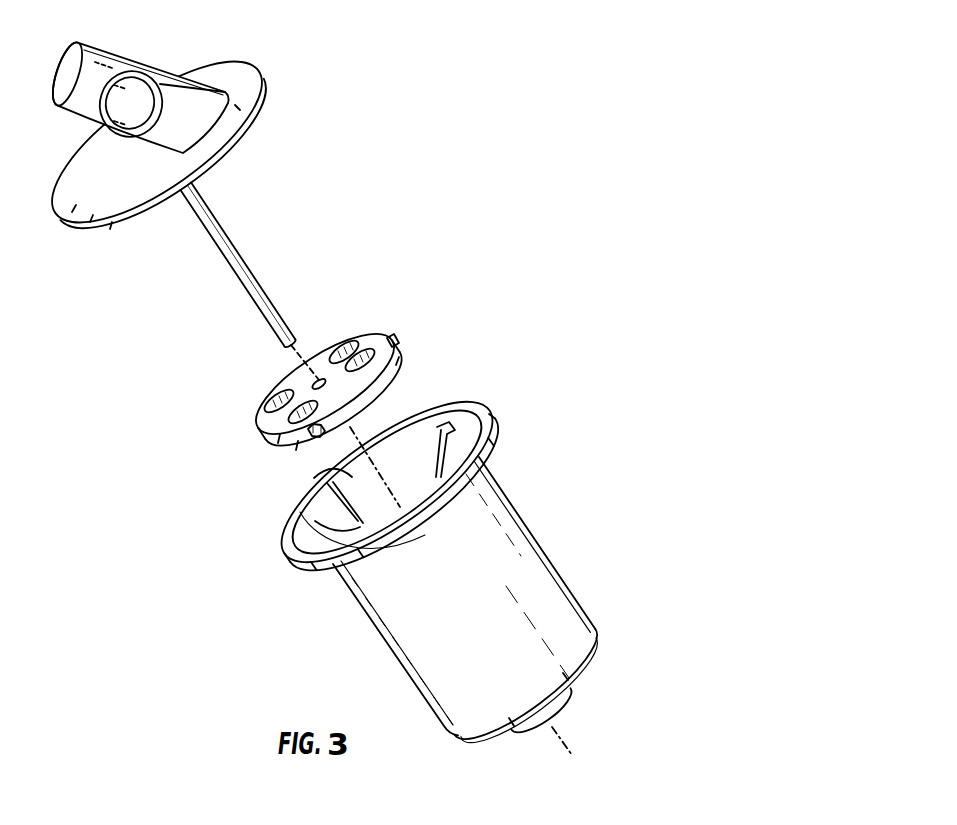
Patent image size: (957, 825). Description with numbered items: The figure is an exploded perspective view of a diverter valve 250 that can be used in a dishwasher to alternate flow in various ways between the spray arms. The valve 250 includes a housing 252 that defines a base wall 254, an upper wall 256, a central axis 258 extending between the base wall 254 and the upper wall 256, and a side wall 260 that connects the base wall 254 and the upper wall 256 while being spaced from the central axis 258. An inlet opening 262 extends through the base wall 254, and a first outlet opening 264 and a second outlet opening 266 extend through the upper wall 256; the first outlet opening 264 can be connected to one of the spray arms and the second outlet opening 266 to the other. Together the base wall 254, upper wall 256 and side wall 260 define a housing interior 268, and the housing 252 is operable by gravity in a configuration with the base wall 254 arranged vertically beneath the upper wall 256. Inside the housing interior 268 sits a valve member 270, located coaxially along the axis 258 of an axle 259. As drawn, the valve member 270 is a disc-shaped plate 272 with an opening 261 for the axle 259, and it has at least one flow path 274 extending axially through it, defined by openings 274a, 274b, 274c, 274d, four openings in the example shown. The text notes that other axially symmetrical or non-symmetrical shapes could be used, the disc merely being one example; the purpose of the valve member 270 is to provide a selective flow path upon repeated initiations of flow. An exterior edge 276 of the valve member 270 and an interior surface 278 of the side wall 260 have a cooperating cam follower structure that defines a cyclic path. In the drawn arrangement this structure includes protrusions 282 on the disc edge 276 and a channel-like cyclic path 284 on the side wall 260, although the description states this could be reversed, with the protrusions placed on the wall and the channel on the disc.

The valve 250 is at (606, 290).
The housing 252 is at (457, 559).
The base wall 254 is at (592, 663).
The upper wall 256 is at (243, 82).
The central axis 258 is at (320, 380).
The axle 259 is at (250, 258).
The side wall 260 is at (494, 518).
The opening 261 is at (316, 380).
The inlet opening 262 is at (562, 712).
The first outlet opening 264 is at (146, 77).
The second outlet opening 266 is at (110, 55).
The housing interior 268 is at (352, 449).
The valve member 270 is at (309, 380).
The disc-shaped plate 272 is at (332, 414).
The flow path 274 is at (313, 358).
The opening 274a is at (365, 345).
The opening 274b is at (362, 362).
The opening 274c is at (297, 414).
The opening 274d is at (280, 398).
The exterior edge 276 is at (256, 420).
The interior surface 278 is at (350, 450).
The protrusions 282 is at (397, 343).
The cyclic path 284 is at (409, 473).